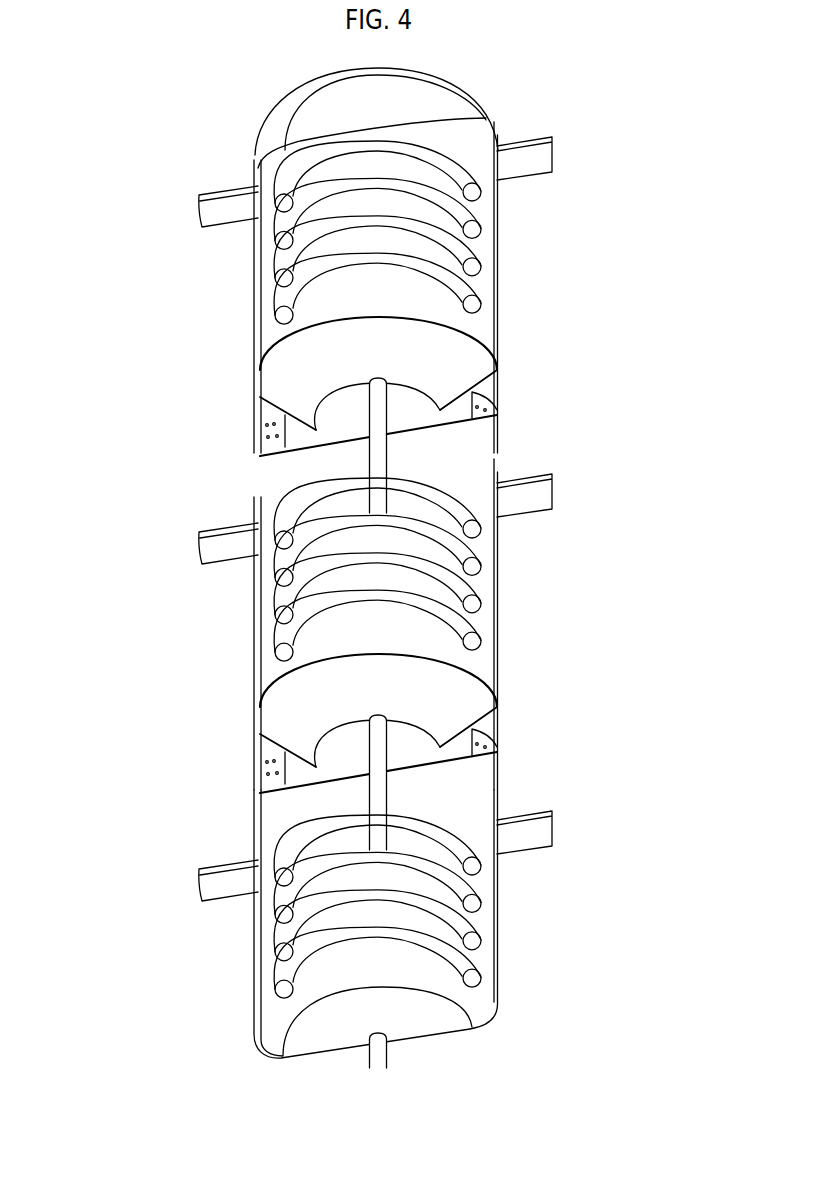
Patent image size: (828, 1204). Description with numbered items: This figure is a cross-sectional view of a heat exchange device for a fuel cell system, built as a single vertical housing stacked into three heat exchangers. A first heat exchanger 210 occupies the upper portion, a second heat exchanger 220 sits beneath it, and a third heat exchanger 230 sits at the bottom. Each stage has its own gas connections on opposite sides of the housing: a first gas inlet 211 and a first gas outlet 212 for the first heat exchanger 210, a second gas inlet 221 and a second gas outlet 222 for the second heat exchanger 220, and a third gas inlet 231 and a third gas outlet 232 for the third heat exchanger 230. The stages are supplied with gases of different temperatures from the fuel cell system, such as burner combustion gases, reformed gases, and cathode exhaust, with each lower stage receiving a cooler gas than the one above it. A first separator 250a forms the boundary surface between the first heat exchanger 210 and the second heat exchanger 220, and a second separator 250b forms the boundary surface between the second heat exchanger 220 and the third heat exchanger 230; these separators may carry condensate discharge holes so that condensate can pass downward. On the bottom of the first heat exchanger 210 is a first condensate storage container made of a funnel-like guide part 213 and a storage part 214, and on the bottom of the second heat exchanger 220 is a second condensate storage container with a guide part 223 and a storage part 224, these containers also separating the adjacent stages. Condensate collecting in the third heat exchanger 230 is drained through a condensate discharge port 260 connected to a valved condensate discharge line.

The first heat exchanger 210 is at (500, 287).
The first gas inlet 211 is at (220, 203).
The first gas outlet 212 is at (540, 156).
The guide part of first condensate storage container 213 is at (260, 371).
The storage part of first condensate storage container 214 is at (258, 428).
The second heat exchanger 220 is at (500, 592).
The second gas inlet 221 is at (223, 545).
The second gas outlet 222 is at (540, 493).
The guide part of second condensate storage container 223 is at (260, 707).
The storage part of second condensate storage container 224 is at (260, 767).
The third heat exchanger 230 is at (500, 905).
The third gas inlet 231 is at (217, 888).
The third gas outlet 232 is at (545, 830).
The first separator 250a is at (497, 415).
The second separator 250b is at (497, 752).
The condensate discharge port 260 is at (377, 1057).